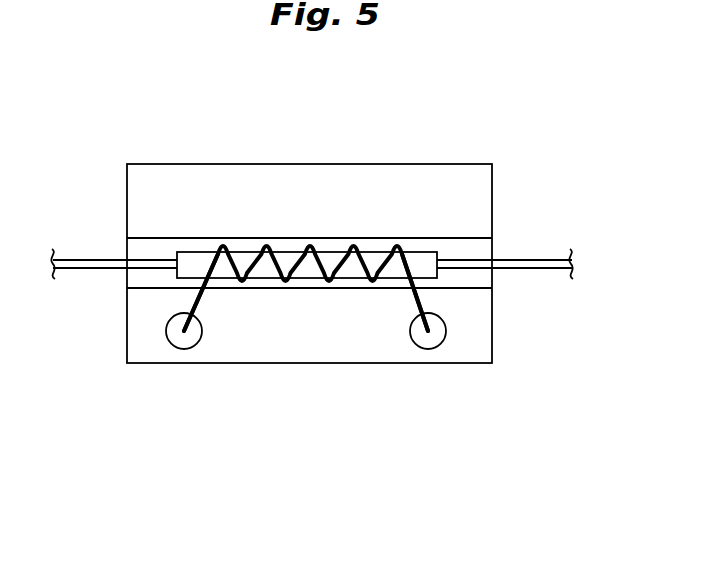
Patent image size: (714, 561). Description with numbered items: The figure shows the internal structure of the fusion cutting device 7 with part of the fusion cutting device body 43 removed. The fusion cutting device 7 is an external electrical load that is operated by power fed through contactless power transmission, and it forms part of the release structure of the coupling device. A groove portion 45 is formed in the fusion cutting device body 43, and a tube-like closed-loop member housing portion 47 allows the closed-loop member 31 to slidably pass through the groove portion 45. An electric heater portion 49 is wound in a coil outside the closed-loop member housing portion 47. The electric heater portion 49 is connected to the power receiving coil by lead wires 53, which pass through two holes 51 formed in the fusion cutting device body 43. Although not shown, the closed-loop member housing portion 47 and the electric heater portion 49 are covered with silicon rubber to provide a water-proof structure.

The fusion cutting device 7 is at (492, 142).
The closed-loop member 31 is at (536, 258).
The fusion cutting device body 43 is at (492, 172).
The groove portion 45 is at (487, 282).
The closed-loop member housing portion 47 is at (413, 258).
The electric heater portion 49 is at (264, 242).
The hole 51 is at (185, 349).
The lead wire 53 is at (198, 304).